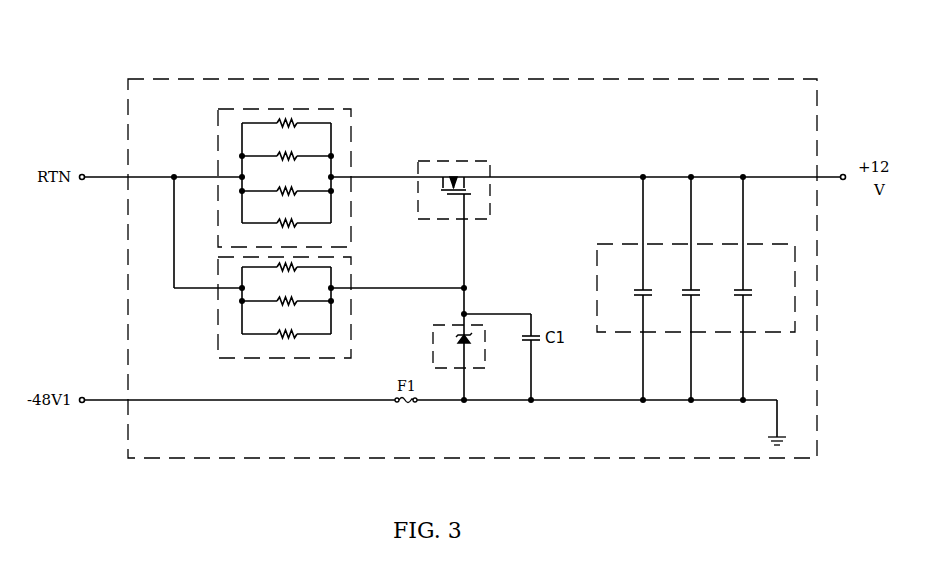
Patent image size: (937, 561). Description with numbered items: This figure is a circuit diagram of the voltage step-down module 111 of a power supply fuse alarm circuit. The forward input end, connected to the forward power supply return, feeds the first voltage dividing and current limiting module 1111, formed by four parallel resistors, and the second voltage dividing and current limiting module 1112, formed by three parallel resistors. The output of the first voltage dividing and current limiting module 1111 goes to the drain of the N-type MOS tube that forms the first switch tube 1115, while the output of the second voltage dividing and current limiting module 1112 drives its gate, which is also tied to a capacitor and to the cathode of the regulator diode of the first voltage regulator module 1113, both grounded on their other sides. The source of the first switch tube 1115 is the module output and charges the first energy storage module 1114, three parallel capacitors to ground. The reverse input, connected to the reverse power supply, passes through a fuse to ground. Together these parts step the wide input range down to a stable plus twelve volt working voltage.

The voltage step-down module 111 is at (485, 79).
The first voltage dividing and current limiting module 1111 is at (351, 150).
The second voltage dividing and current limiting module 1112 is at (351, 337).
The first voltage regulator module 1113 is at (477, 323).
The first energy storage module 1114 is at (795, 290).
The first switch tube 1115 is at (454, 161).